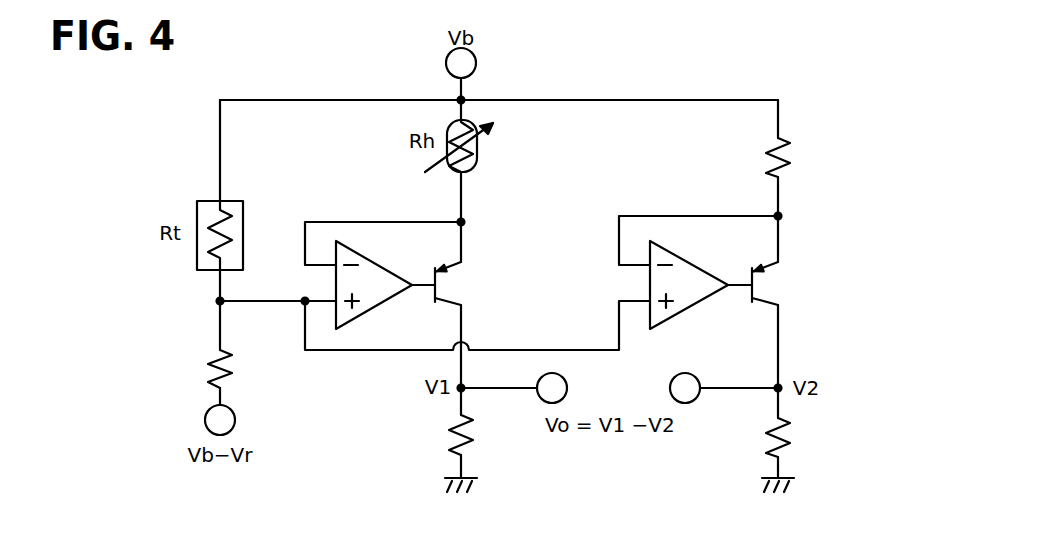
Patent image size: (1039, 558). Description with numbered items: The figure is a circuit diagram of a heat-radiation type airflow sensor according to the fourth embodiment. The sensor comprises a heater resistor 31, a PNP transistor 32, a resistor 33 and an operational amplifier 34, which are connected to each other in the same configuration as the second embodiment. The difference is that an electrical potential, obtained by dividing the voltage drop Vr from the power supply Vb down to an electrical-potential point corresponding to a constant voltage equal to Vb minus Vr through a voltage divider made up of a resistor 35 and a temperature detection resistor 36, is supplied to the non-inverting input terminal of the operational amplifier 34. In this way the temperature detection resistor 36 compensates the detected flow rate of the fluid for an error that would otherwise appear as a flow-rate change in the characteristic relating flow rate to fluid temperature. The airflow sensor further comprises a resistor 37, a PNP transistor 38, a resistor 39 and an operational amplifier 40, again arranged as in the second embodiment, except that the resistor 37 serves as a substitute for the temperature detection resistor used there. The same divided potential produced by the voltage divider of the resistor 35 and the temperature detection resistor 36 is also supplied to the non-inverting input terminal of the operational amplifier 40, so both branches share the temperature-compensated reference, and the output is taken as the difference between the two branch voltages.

The heater resistor 31 is at (478, 155).
The PNP transistor 32 is at (445, 272).
The resistor 33 is at (470, 440).
The operational amplifier 34 is at (375, 262).
The resistor 35 is at (233, 373).
The temperature detection resistor 36 is at (243, 215).
The resistor 37 is at (790, 145).
The PNP transistor 38 is at (760, 272).
The resistor 39 is at (790, 430).
The operational amplifier 40 is at (690, 262).